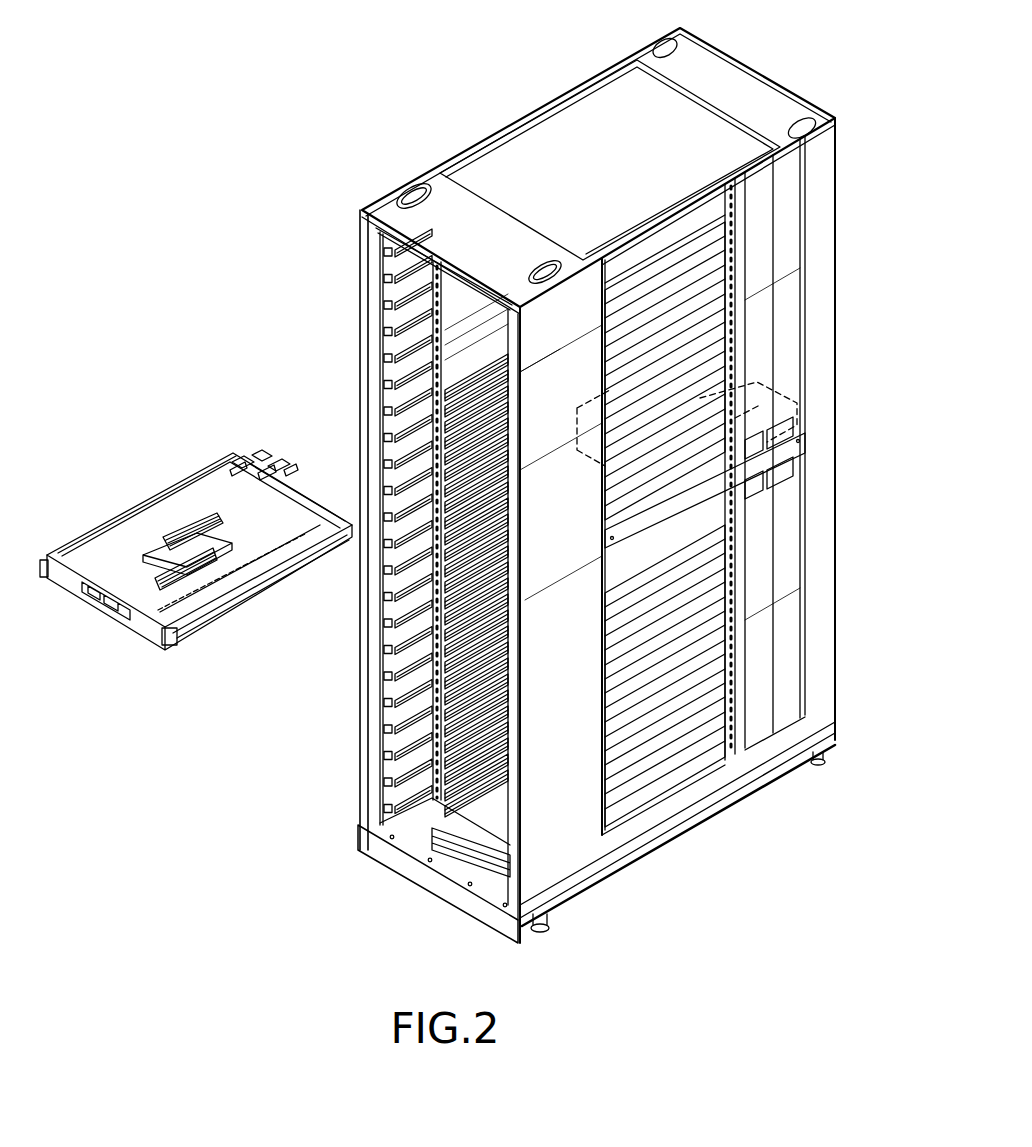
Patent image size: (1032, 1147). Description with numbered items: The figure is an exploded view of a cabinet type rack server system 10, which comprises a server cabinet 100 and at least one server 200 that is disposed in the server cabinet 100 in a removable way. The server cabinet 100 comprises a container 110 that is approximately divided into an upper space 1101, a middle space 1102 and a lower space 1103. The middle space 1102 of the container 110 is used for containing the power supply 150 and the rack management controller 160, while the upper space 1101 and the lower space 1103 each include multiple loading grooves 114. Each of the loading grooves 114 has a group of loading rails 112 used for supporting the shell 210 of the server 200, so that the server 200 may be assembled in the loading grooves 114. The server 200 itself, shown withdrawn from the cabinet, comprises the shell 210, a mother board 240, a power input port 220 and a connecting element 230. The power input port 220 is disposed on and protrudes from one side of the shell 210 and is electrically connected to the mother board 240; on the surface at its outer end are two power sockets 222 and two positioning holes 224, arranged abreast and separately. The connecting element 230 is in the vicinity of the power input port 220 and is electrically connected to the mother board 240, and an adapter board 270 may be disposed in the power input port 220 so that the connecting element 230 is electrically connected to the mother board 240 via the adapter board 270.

The rack server system 10 is at (222, 23).
The server cabinet 100 is at (524, 80).
The container 110 is at (846, 120).
The loading rails 112 is at (482, 277).
The loading grooves 114 is at (432, 338).
The upper space 1101 is at (427, 378).
The middle space 1102 is at (372, 580).
The lower space 1103 is at (395, 757).
The power supply 150 is at (768, 462).
The rack management controller 160 is at (760, 397).
The server 200 is at (122, 495).
The shell 210 is at (237, 593).
The power input port 220 is at (260, 438).
The power sockets 222 is at (278, 455).
The positioning holes 224 is at (250, 452).
The connecting element 230 is at (302, 477).
The mother board 240 is at (186, 483).
The adapter board 270 is at (233, 468).